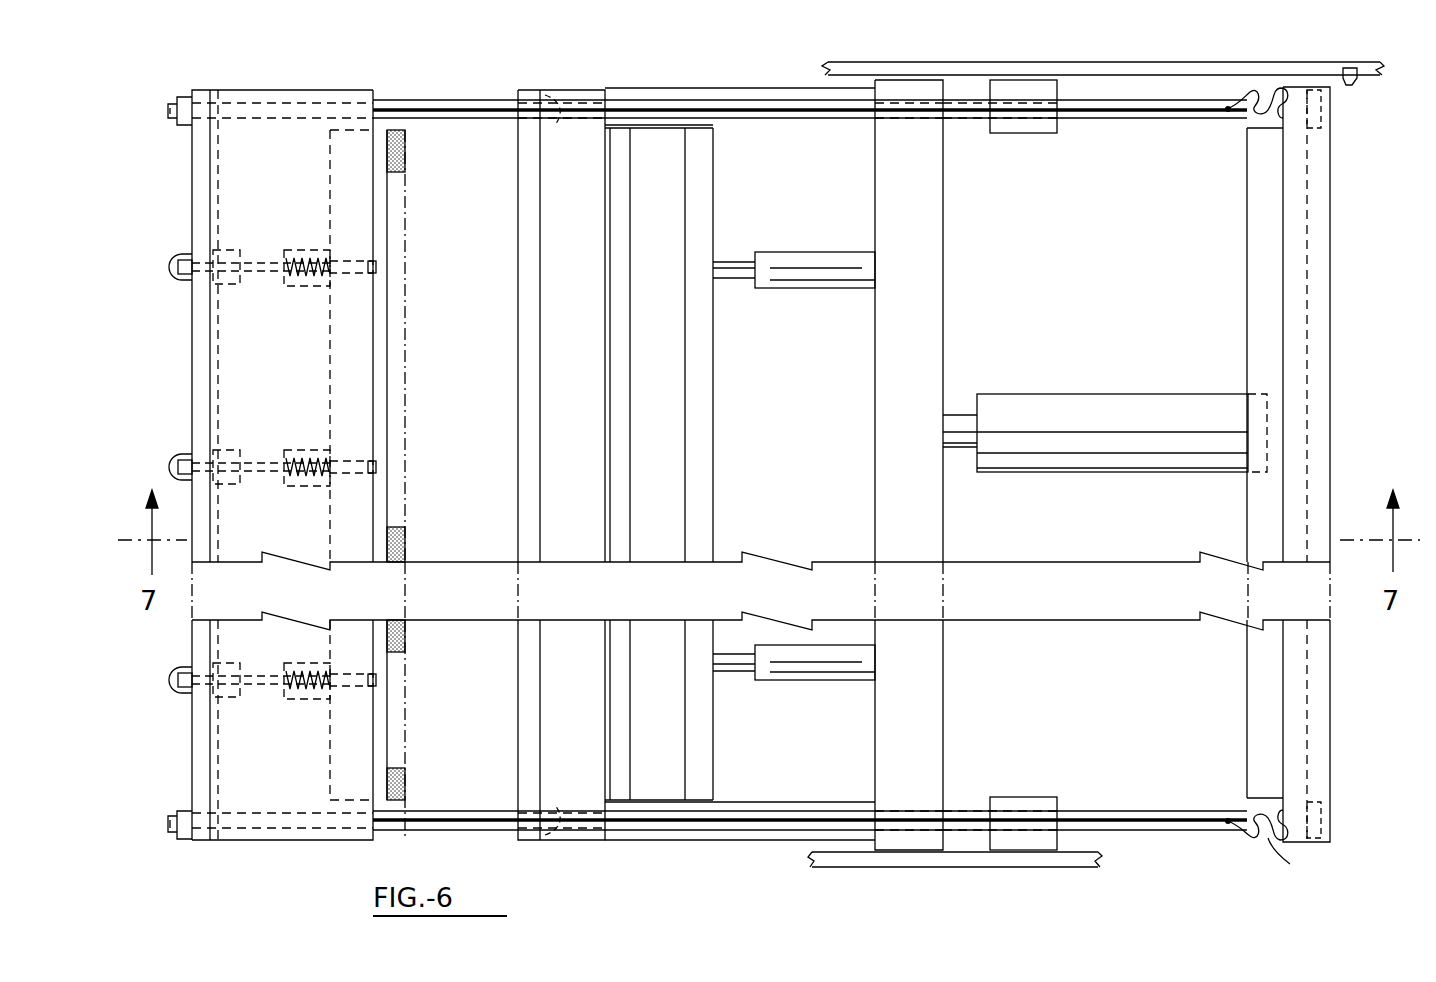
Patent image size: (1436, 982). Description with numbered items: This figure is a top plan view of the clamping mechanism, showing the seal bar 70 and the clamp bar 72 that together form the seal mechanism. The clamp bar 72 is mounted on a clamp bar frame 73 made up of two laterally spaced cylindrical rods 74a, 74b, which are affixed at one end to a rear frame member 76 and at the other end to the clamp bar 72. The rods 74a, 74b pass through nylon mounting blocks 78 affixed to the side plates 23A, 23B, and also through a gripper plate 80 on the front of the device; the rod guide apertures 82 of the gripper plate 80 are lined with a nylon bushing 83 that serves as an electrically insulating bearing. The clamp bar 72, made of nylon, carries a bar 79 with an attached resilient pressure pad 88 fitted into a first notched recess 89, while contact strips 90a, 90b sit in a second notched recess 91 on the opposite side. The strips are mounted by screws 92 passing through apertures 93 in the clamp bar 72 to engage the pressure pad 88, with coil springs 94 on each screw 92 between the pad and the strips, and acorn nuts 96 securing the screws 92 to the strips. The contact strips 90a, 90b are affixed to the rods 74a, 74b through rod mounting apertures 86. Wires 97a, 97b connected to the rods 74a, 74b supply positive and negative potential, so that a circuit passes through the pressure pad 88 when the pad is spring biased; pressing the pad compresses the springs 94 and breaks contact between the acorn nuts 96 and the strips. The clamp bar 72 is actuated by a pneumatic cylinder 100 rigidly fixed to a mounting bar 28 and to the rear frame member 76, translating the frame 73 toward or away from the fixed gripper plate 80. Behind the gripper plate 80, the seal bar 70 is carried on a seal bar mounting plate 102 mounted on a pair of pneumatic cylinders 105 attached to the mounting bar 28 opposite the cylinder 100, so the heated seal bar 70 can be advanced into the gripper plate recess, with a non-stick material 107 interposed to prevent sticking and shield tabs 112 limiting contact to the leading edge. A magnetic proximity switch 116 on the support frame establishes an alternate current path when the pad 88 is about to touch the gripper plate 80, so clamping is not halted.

The side plate 23A is at (832, 60).
The side plate 23B is at (1050, 870).
The mounting bar 28 is at (938, 238).
The seal bar 70 is at (668, 497).
The clamp bar 72 is at (245, 384).
The clamp bar frame 73 is at (422, 88).
The cylindrical rod 74a is at (692, 100).
The cylindrical rod 74b is at (720, 822).
The rear frame member 76 is at (1330, 218).
The nylon mounting block 78 is at (1048, 133).
The bar 79 is at (384, 272).
The gripper plate 80 is at (548, 378).
The rod guide aperture 82 is at (560, 95).
The nylon bushing 83 is at (555, 118).
The rod mounting aperture 86 is at (286, 101).
The pressure pad 88 is at (405, 150).
The first notched recess 89 is at (330, 200).
The contact strip 90a is at (200, 332).
The contact strip 90b is at (200, 760).
The second notched recess 91 is at (215, 152).
The screw 92 is at (258, 262).
The aperture 93 is at (350, 275).
The coil spring 94 is at (300, 250).
The acorn nut 96 is at (175, 268).
The wire 97a is at (1240, 112).
The wire 97b is at (1278, 848).
The pneumatic cylinder 100 is at (1075, 394).
The seal bar mounting plate 102 is at (700, 523).
The pneumatic cylinder 105 is at (820, 252).
The non-stick material 107 is at (630, 343).
The tab 112 is at (630, 373).
The magnetic proximity switch 116 is at (1354, 85).